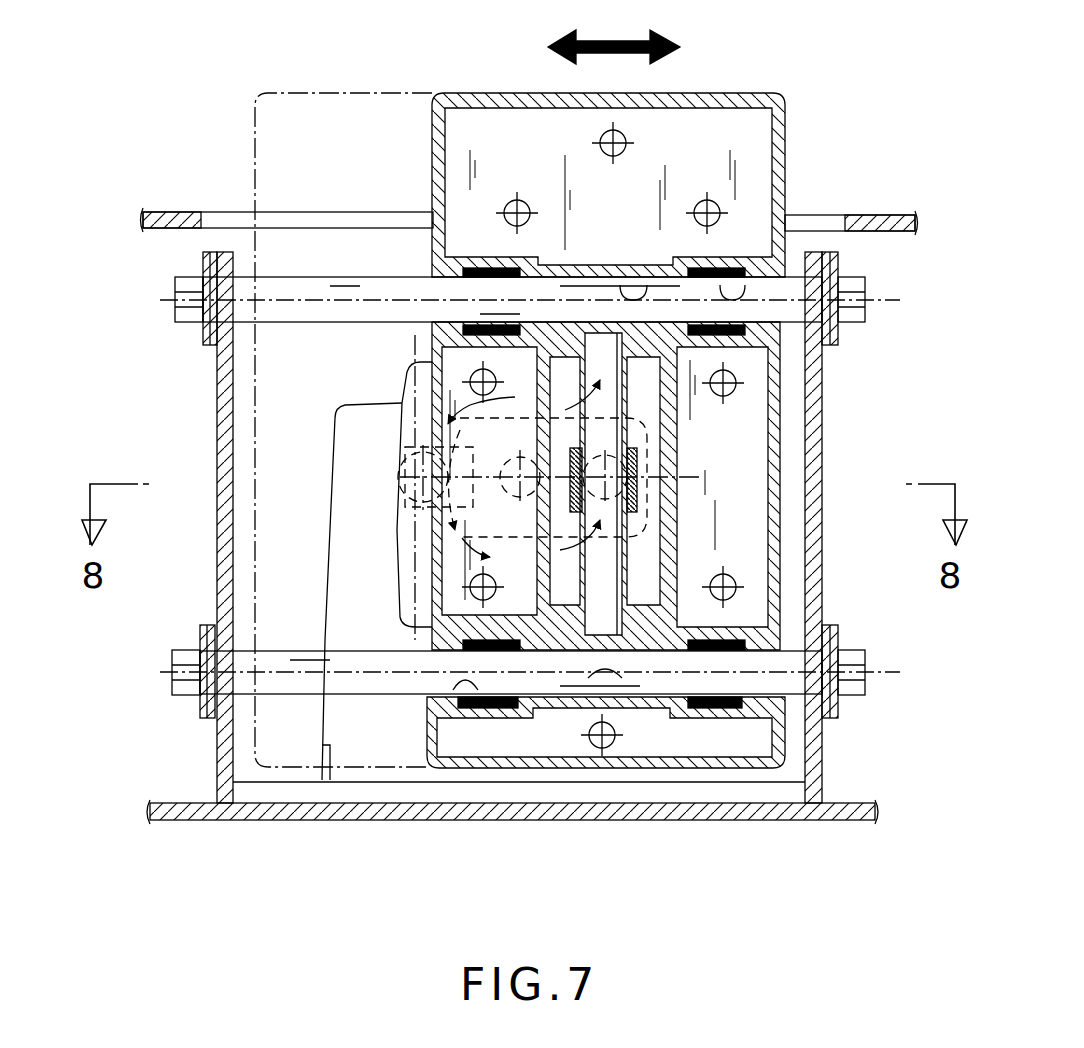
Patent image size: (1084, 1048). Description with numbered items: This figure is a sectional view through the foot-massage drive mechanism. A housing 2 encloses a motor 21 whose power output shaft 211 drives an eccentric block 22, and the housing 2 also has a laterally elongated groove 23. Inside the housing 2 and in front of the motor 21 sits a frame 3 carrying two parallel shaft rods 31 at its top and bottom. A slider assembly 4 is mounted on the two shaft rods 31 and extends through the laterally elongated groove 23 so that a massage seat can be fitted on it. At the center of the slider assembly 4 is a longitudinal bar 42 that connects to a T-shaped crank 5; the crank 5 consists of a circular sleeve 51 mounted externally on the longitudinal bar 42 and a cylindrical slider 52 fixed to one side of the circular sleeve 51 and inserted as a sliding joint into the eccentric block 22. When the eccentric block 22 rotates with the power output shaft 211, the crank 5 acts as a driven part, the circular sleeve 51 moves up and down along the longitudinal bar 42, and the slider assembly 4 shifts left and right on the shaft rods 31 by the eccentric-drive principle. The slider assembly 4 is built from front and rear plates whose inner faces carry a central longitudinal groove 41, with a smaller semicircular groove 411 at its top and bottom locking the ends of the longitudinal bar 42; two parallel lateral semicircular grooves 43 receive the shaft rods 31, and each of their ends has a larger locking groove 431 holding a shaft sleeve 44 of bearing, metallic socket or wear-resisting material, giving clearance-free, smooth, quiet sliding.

The housing 2 is at (175, 213).
The frame 3 is at (217, 412).
The slider assembly 4 is at (268, 84).
The crank 5 is at (880, 443).
The motor 21 is at (345, 475).
The power output shaft 211 is at (412, 395).
The eccentric block 22 is at (720, 435).
The laterally elongated groove 23 is at (340, 220).
The shaft rods 31 is at (388, 296).
The longitudinal groove 41 is at (640, 555).
The semicircular groove 411 is at (612, 625).
The longitudinal bar 42 is at (640, 525).
The lateral semicircular groove 43 is at (650, 285).
The locking groove 431 is at (735, 280).
The shaft sleeve 44 is at (485, 268).
The circular sleeve 51 is at (640, 465).
The cylindrical slider 52 is at (640, 495).